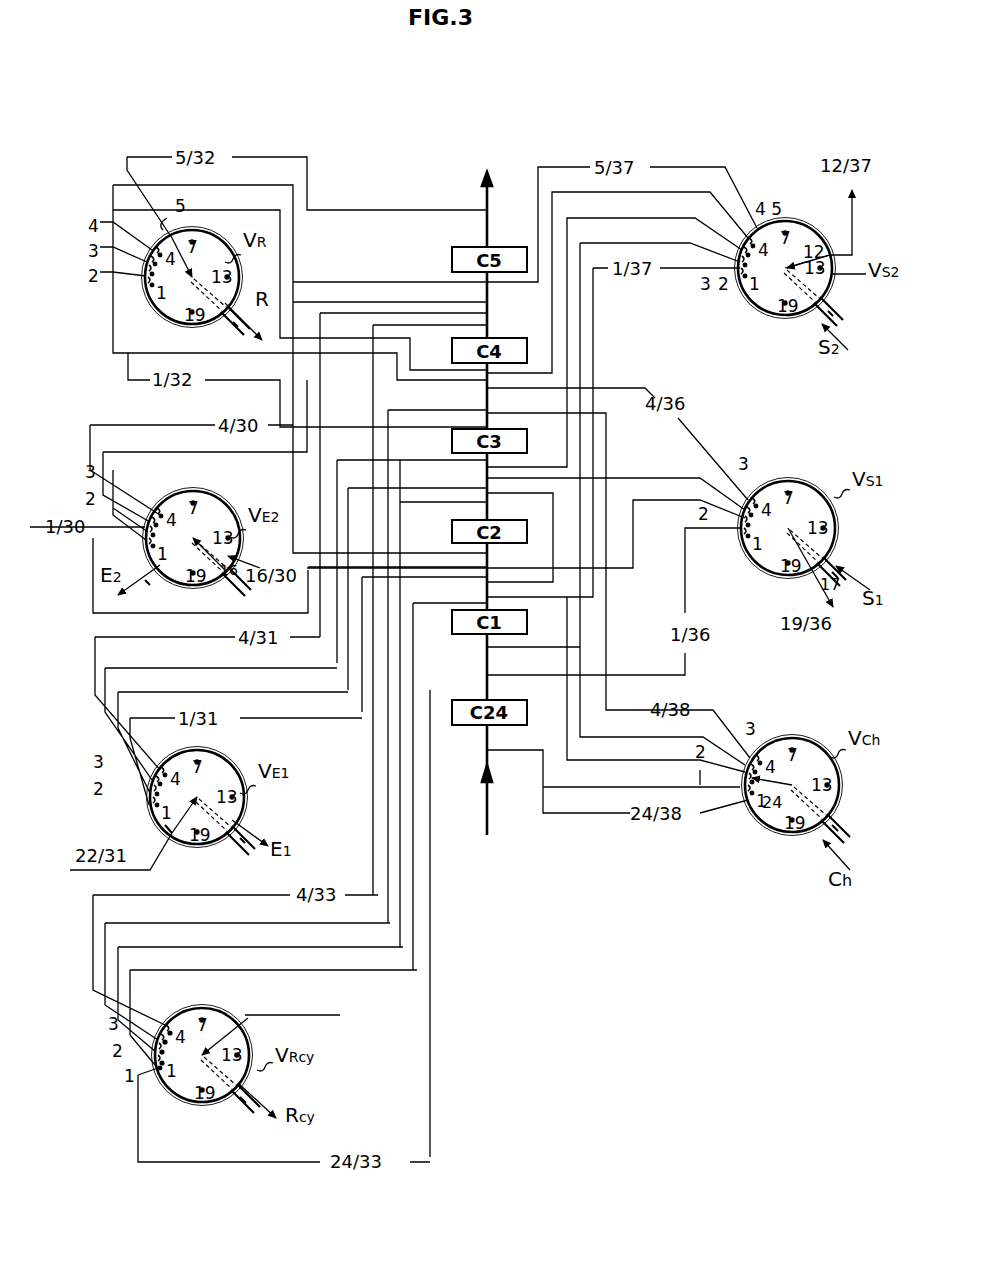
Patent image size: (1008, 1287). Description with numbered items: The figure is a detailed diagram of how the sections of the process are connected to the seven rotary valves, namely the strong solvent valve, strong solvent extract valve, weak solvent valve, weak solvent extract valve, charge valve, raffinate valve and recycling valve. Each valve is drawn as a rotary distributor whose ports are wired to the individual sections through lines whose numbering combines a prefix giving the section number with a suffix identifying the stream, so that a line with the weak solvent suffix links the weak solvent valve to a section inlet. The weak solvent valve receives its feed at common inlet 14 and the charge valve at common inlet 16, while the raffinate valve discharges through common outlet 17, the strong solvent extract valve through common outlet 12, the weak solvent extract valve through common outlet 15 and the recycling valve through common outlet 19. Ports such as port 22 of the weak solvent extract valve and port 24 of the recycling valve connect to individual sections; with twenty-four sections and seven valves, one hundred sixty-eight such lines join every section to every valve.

The common outlet of the strong solvent extract valve 12 is at (150, 585).
The common inlet of the weak solvent valve 14 is at (846, 574).
The common outlet of the weak solvent extract valve 15 is at (243, 843).
The common inlet of the charge valve 16 is at (845, 835).
The common outlet of the raffinate valve 17 is at (235, 325).
The common outlet of the recycling valve 19 is at (243, 1100).
The port 22 of valve VE1 22 is at (165, 828).
The port 24 of valve VRcy 24 is at (172, 1069).